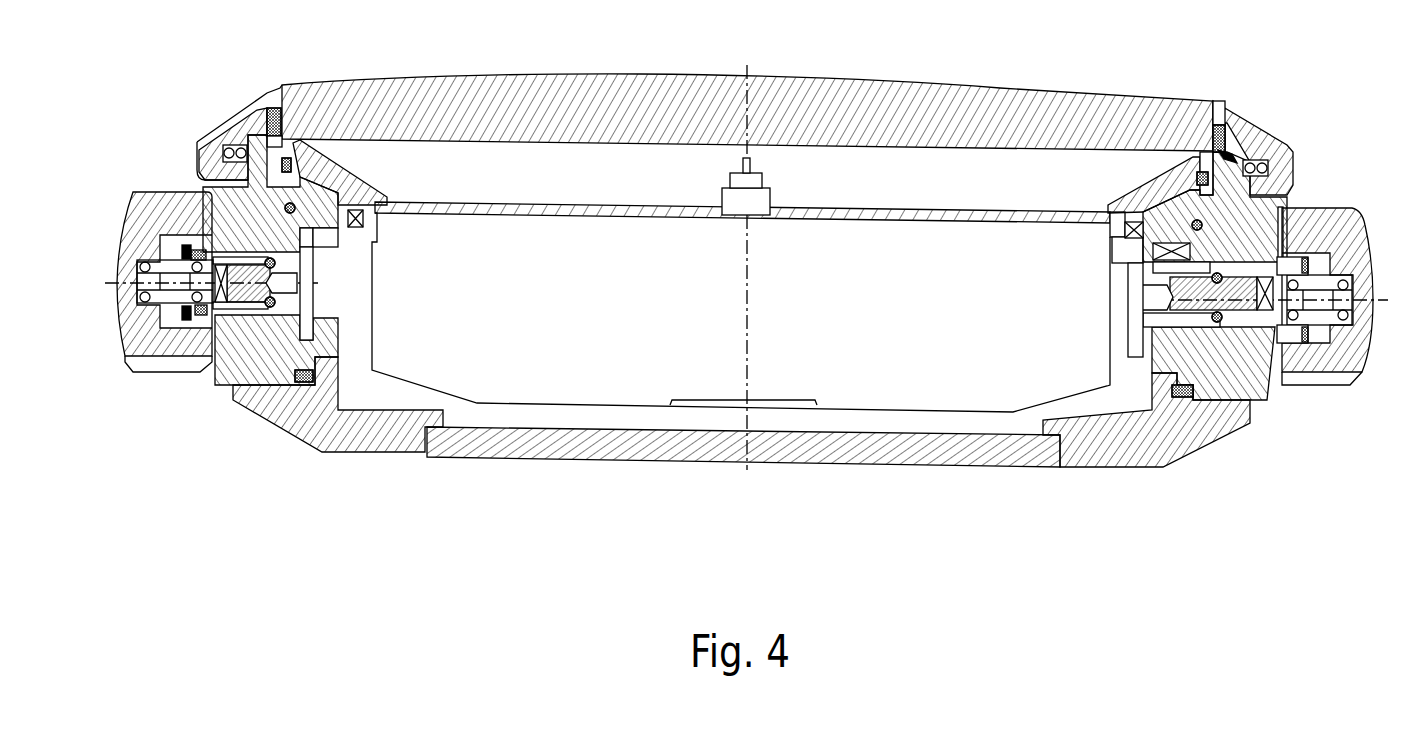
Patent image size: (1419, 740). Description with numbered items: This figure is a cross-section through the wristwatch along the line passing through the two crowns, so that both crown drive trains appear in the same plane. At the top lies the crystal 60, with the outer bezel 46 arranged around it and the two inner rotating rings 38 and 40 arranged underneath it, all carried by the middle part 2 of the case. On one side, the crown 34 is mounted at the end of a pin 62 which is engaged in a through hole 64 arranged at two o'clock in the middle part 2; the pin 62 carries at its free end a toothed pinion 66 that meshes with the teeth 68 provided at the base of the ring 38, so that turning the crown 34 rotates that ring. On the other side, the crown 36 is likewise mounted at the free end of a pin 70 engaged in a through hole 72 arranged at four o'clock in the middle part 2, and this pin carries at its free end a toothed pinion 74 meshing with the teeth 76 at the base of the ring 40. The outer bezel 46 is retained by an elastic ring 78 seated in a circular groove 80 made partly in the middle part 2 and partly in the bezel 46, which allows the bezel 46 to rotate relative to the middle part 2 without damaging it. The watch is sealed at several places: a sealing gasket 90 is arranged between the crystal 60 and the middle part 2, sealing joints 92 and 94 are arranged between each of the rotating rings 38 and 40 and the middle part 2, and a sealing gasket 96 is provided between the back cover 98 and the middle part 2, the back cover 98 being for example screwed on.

The middle part 2 is at (1289, 174).
The crown 34 is at (1347, 243).
The crown 36 is at (163, 212).
The ring 38 is at (1125, 205).
The ring 40 is at (1128, 240).
The outer bezel 46 is at (1258, 128).
The crystal 60 is at (878, 97).
The pin 62 is at (1240, 310).
The through hole 64 is at (1232, 365).
The toothed pinion 66 is at (1137, 328).
The teeth 68 is at (1108, 210).
The pin 70 is at (240, 370).
The through hole 72 is at (284, 330).
The toothed pinion 74 is at (313, 262).
The teeth 76 is at (1128, 268).
The elastic ring 78 is at (1266, 162).
The circular groove 80 is at (1211, 148).
The sealing gasket 90 is at (1218, 110).
The sealing joint 92 is at (1197, 175).
The sealing joint 94 is at (1281, 238).
The sealing gasket 96 is at (1180, 398).
The back cover 98 is at (977, 453).